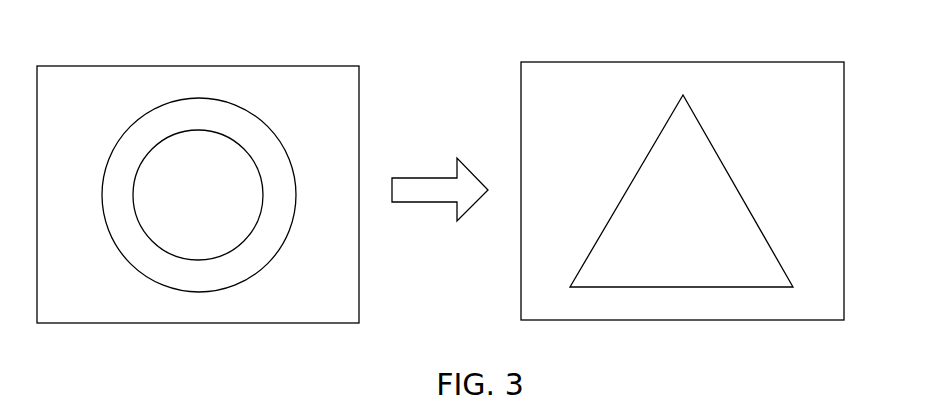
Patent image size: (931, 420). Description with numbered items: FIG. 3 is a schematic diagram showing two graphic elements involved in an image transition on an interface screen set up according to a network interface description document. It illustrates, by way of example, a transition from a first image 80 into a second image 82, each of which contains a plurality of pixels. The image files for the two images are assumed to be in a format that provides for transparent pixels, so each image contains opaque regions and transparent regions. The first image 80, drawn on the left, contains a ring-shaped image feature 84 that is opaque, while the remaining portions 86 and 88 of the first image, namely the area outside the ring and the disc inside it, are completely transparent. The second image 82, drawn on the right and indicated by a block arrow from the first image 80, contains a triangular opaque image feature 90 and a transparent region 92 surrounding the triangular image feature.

The first image 80 is at (181, 53).
The second image 82 is at (664, 55).
The ring-shaped image feature 84 is at (182, 270).
The remaining portion of the first image 86 is at (86, 301).
The remaining portion of the first image 88 is at (230, 205).
The triangular opaque image feature 90 is at (617, 270).
The transparent region 92 is at (779, 302).